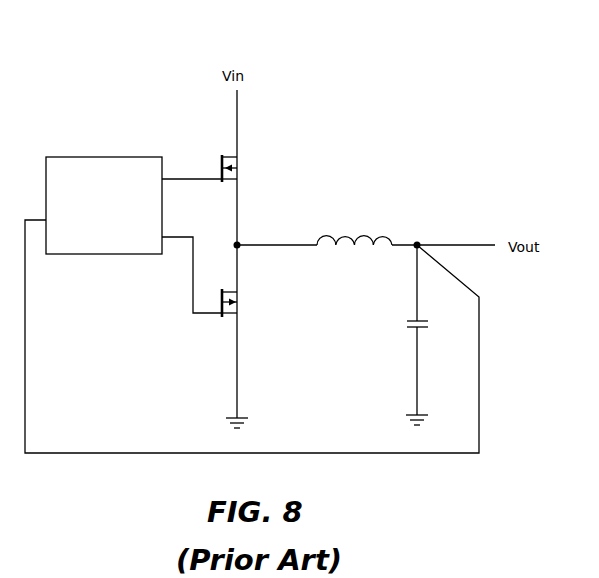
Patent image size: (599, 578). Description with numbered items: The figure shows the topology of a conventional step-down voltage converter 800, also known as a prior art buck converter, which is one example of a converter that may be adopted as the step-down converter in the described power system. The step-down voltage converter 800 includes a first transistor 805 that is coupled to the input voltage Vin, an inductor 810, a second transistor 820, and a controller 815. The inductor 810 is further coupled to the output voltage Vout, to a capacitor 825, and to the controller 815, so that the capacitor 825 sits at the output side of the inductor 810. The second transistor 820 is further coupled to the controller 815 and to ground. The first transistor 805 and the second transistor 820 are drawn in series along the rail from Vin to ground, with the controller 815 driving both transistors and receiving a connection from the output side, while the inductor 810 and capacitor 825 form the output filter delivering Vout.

The step-down voltage converter 800 is at (455, 134).
The first transistor 805 is at (248, 168).
The inductor 810 is at (354, 229).
The controller 815 is at (104, 196).
The second transistor 820 is at (248, 303).
The capacitor 825 is at (432, 330).